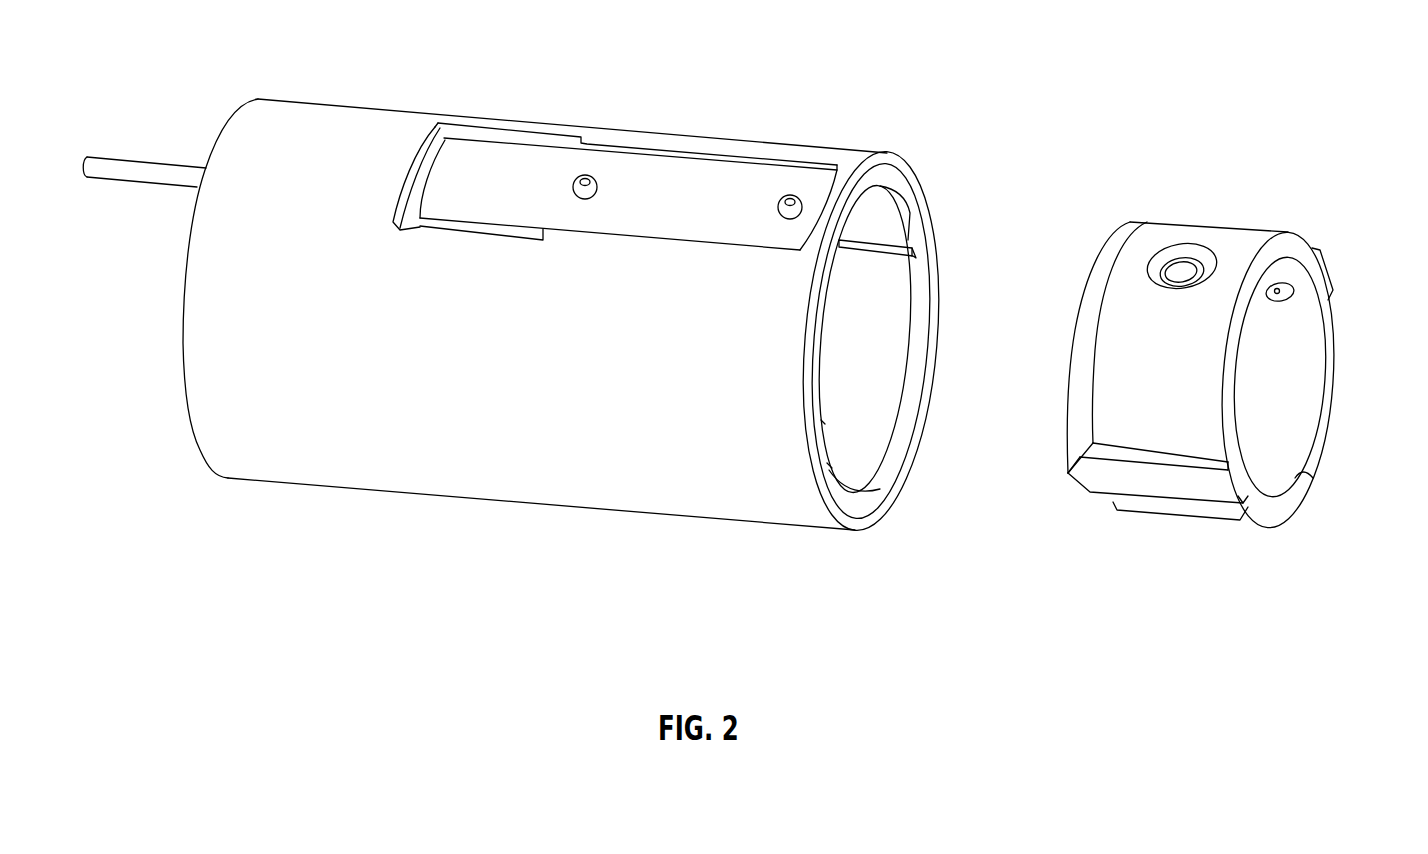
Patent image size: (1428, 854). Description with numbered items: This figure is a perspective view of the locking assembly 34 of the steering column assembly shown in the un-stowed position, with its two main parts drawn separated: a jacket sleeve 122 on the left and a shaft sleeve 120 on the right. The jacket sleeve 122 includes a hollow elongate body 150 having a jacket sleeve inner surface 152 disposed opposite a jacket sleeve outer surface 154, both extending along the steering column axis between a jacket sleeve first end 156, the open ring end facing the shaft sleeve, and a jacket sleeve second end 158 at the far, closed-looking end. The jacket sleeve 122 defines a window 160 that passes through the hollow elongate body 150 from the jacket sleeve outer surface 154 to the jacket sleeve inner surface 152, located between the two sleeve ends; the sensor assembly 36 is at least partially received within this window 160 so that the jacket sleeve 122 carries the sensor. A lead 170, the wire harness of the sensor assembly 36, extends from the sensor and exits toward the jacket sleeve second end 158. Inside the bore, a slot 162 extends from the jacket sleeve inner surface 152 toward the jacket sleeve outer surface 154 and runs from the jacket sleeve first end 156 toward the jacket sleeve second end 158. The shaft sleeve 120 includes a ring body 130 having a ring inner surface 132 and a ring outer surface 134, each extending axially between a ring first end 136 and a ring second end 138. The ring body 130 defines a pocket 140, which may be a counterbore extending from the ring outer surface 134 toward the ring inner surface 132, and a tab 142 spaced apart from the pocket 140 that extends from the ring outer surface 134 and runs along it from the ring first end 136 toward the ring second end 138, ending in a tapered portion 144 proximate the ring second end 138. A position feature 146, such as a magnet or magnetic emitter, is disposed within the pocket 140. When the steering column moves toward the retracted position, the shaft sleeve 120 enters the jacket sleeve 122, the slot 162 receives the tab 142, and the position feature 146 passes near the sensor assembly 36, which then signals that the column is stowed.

The locking assembly 34 is at (1202, 343).
The sensor assembly 36 is at (487, 173).
The shaft sleeve 120 is at (1202, 373).
The jacket sleeve 122 is at (590, 277).
The ring body 130 is at (1262, 232).
The ring inner surface 132 is at (1300, 470).
The ring outer surface 134 is at (1236, 525).
The ring first end 136 is at (1330, 385).
The ring second end 138 is at (1072, 340).
The pocket 140 is at (1177, 262).
The tab 142 is at (1158, 480).
The tapered portion 144 is at (1067, 480).
The position feature 146 is at (1183, 278).
The hollow elongate body 150 is at (683, 175).
The jacket sleeve inner surface 152 is at (915, 292).
The jacket sleeve outer surface 154 is at (836, 150).
The jacket sleeve first end 156 is at (892, 160).
The jacket sleeve second end 158 is at (229, 128).
The window 160 is at (522, 135).
The slot 162 is at (916, 238).
The lead 170 is at (141, 166).